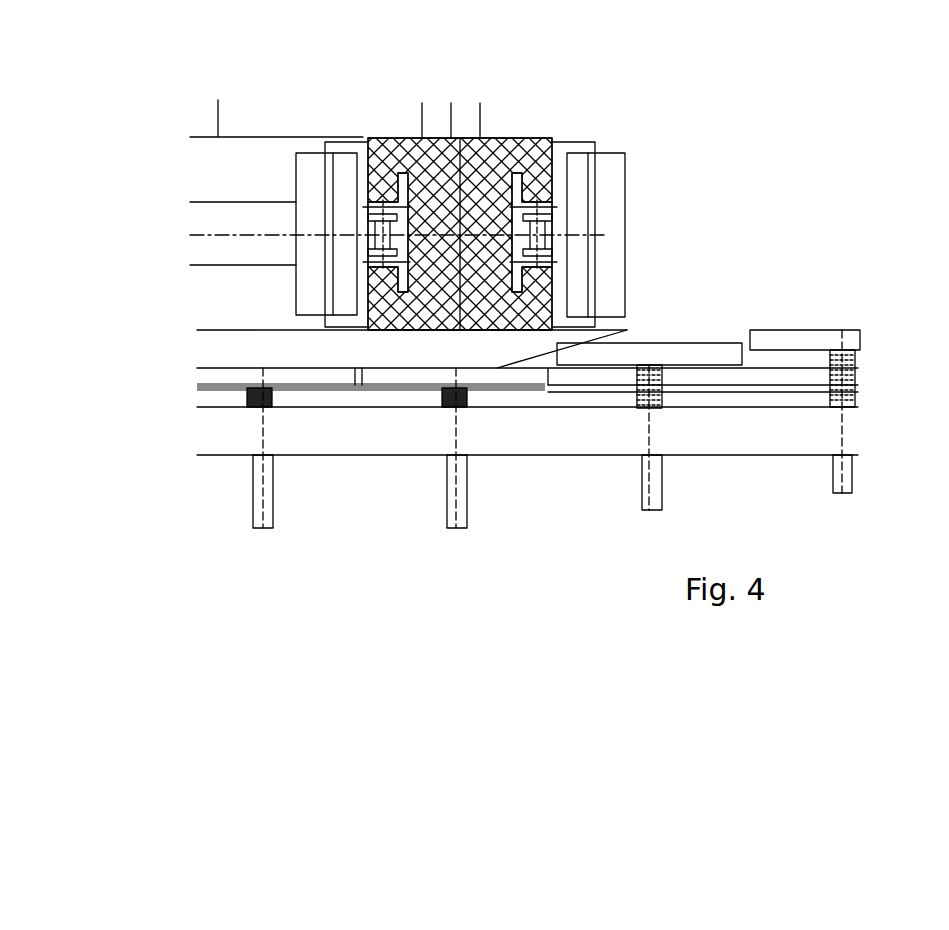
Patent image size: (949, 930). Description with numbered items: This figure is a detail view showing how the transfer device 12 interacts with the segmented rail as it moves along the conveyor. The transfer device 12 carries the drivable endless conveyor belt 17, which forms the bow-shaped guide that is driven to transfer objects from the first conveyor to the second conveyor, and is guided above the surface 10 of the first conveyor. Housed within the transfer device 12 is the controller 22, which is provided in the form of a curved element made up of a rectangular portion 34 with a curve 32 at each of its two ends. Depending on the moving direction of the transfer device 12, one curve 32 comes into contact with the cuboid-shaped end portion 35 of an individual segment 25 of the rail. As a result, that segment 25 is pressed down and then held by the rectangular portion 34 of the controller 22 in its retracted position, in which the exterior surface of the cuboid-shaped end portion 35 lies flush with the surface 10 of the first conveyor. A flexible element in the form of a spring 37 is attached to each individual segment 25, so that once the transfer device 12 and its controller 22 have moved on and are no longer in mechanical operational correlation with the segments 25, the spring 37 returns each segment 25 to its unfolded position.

The surface 10 is at (873, 260).
The transfer device 12 is at (306, 122).
The drivable endless conveyor belt 17 is at (310, 213).
The controller 22 is at (360, 388).
The individual segment 25 is at (690, 492).
The curve 32 is at (540, 350).
The rectangular portion 34 is at (260, 358).
The cuboid-shaped end portion 35 is at (665, 343).
The spring 37 is at (472, 398).